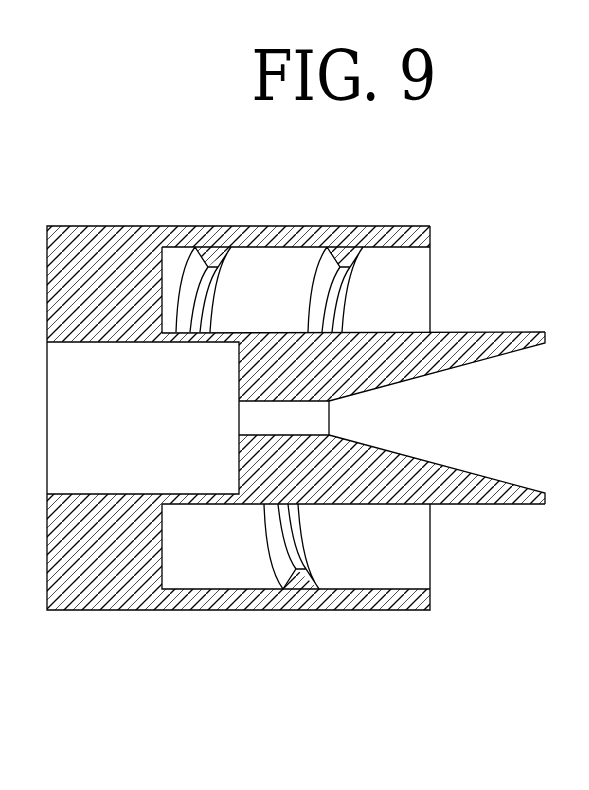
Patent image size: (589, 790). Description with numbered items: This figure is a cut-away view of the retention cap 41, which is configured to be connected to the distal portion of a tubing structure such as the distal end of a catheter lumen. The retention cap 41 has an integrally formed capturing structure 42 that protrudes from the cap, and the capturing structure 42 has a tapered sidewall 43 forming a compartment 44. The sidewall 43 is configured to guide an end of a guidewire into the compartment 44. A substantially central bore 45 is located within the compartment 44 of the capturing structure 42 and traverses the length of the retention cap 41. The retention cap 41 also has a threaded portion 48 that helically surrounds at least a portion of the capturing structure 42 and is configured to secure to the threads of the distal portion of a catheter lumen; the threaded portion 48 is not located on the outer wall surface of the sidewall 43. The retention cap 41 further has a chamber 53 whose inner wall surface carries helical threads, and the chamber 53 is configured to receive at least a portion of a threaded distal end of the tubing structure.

The retention cap 41 is at (123, 608).
The capturing structure 42 is at (538, 504).
The sidewall 43 is at (488, 504).
The compartment 44 is at (493, 382).
The substantially central bore 45 is at (313, 428).
The threaded portion 48 is at (201, 283).
The chamber 53 is at (393, 260).